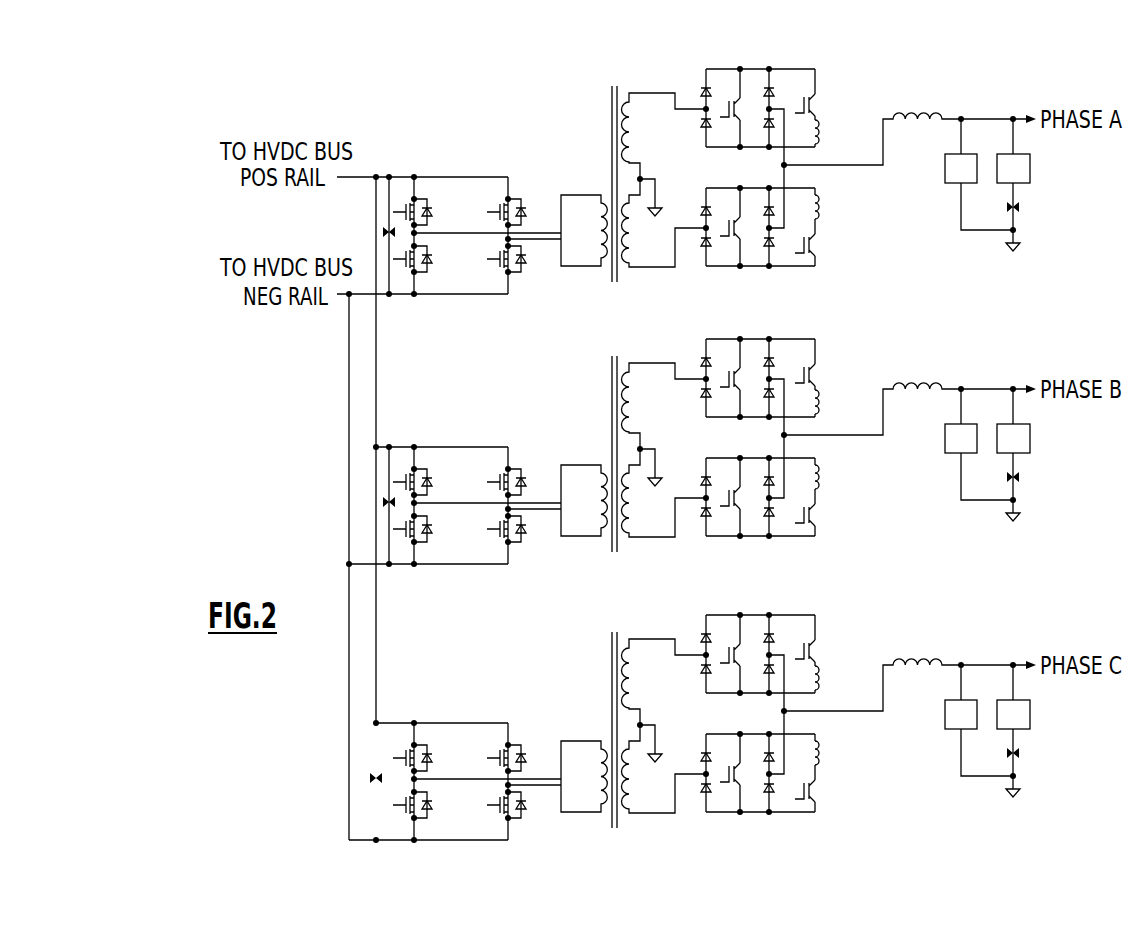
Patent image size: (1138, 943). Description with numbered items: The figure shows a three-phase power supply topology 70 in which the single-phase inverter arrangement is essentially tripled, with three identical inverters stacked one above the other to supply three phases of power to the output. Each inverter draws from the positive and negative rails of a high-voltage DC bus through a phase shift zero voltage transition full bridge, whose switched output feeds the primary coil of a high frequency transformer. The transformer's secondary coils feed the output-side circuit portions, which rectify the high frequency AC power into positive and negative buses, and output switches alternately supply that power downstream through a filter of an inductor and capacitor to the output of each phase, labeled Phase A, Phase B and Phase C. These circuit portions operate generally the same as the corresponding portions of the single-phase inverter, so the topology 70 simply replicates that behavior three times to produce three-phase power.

The topology 70 is at (334, 107).